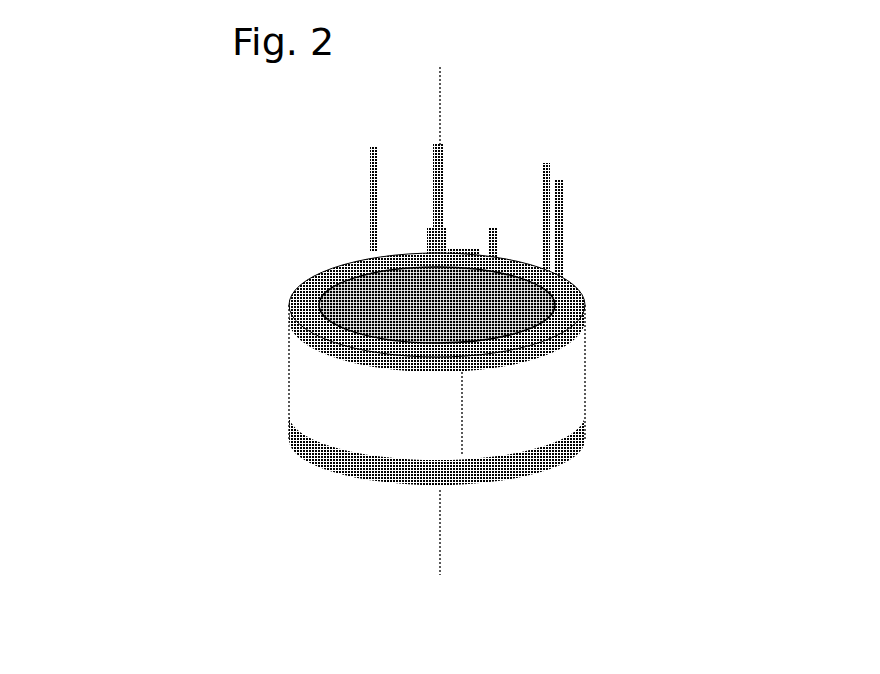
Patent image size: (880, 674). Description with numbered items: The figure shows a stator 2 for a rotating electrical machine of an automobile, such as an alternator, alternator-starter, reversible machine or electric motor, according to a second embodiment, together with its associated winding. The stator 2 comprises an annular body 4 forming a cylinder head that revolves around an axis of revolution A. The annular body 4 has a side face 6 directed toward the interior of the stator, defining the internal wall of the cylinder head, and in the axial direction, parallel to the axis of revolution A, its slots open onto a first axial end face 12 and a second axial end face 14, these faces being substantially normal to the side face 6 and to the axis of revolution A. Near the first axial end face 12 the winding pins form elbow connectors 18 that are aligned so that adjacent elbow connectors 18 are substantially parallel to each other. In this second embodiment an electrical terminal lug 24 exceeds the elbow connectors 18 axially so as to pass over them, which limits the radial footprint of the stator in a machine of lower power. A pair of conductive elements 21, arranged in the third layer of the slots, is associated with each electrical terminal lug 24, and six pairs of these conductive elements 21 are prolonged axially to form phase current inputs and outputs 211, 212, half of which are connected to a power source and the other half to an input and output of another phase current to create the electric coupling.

The stator 2 is at (268, 153).
The annular body 4 is at (288, 388).
The side face 6 is at (385, 304).
The first axial end face 12 is at (300, 345).
The second axial end face 14 is at (290, 428).
The elbow connectors 18 is at (300, 290).
The conductive elements 21 is at (513, 250).
The phase current input 211 is at (441, 152).
The phase current output 212 is at (550, 192).
The electrical terminal lug 24 is at (555, 303).
The axis of revolution A is at (440, 550).